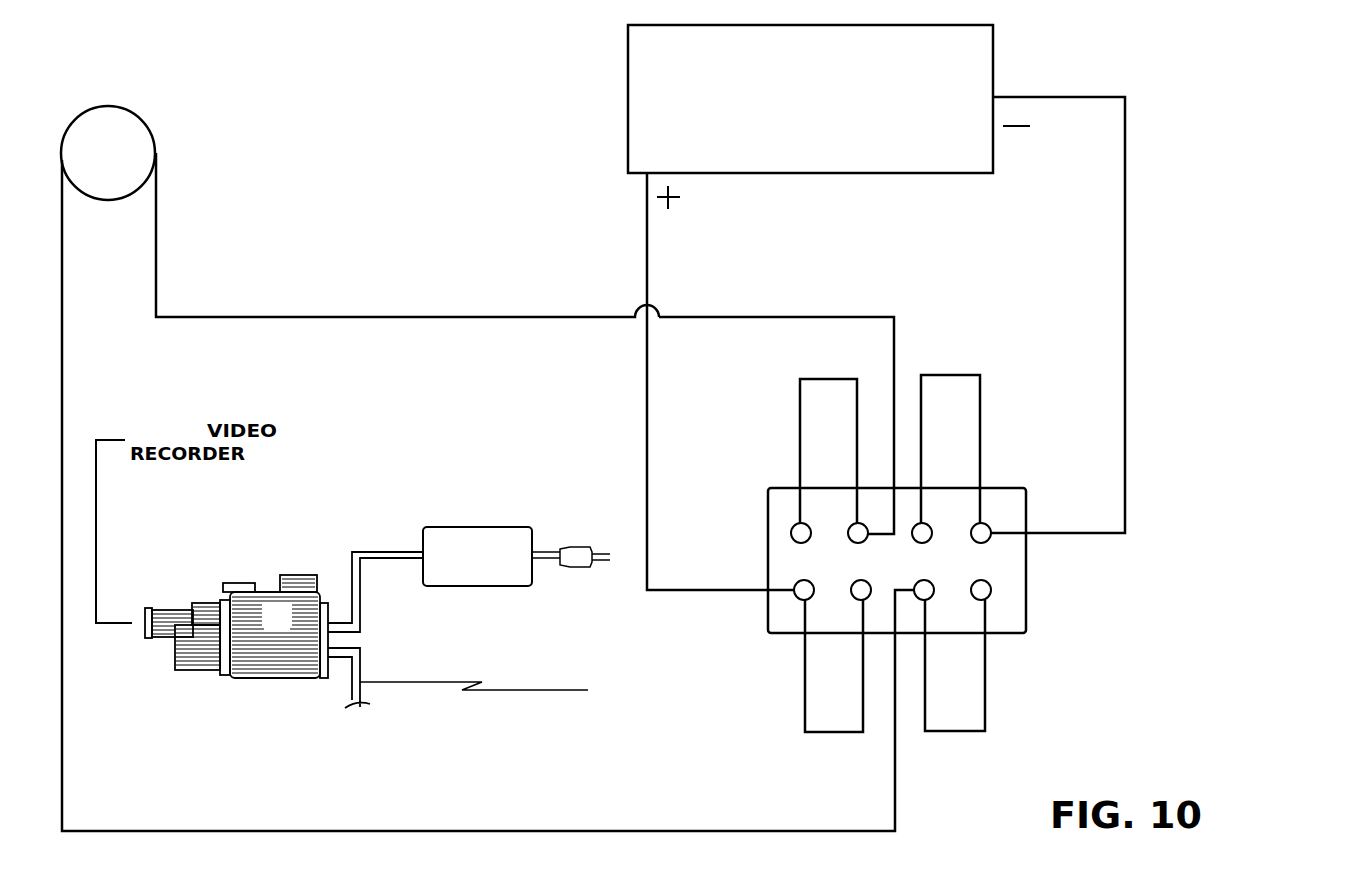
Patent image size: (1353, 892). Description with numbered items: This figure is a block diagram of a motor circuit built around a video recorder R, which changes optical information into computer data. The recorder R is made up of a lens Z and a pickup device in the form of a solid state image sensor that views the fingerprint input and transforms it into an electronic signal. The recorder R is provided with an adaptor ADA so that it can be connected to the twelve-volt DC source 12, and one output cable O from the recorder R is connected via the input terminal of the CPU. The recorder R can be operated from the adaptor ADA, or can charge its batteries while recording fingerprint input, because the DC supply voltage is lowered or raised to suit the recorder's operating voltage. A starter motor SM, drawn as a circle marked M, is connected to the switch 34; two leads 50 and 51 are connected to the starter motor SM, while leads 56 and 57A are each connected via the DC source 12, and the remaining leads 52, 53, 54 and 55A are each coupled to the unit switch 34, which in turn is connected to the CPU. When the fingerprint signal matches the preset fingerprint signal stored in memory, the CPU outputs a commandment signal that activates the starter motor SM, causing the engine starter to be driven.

The 12 V DC source 12 is at (626, 38).
The starter motor SM is at (156, 153).
The motor M is at (108, 153).
The lead 57A is at (647, 268).
The lead 50 is at (826, 316).
The lead 56 is at (1125, 290).
The lead 54 is at (800, 405).
The lead 55A is at (980, 412).
The switch 34 is at (1020, 580).
The lead 53 is at (805, 720).
The lead 52 is at (985, 717).
The lead 51 is at (855, 831).
The lens Z is at (146, 637).
The video recorder R is at (277, 617).
The adaptor ADA is at (503, 587).
The output cable O is at (467, 730).